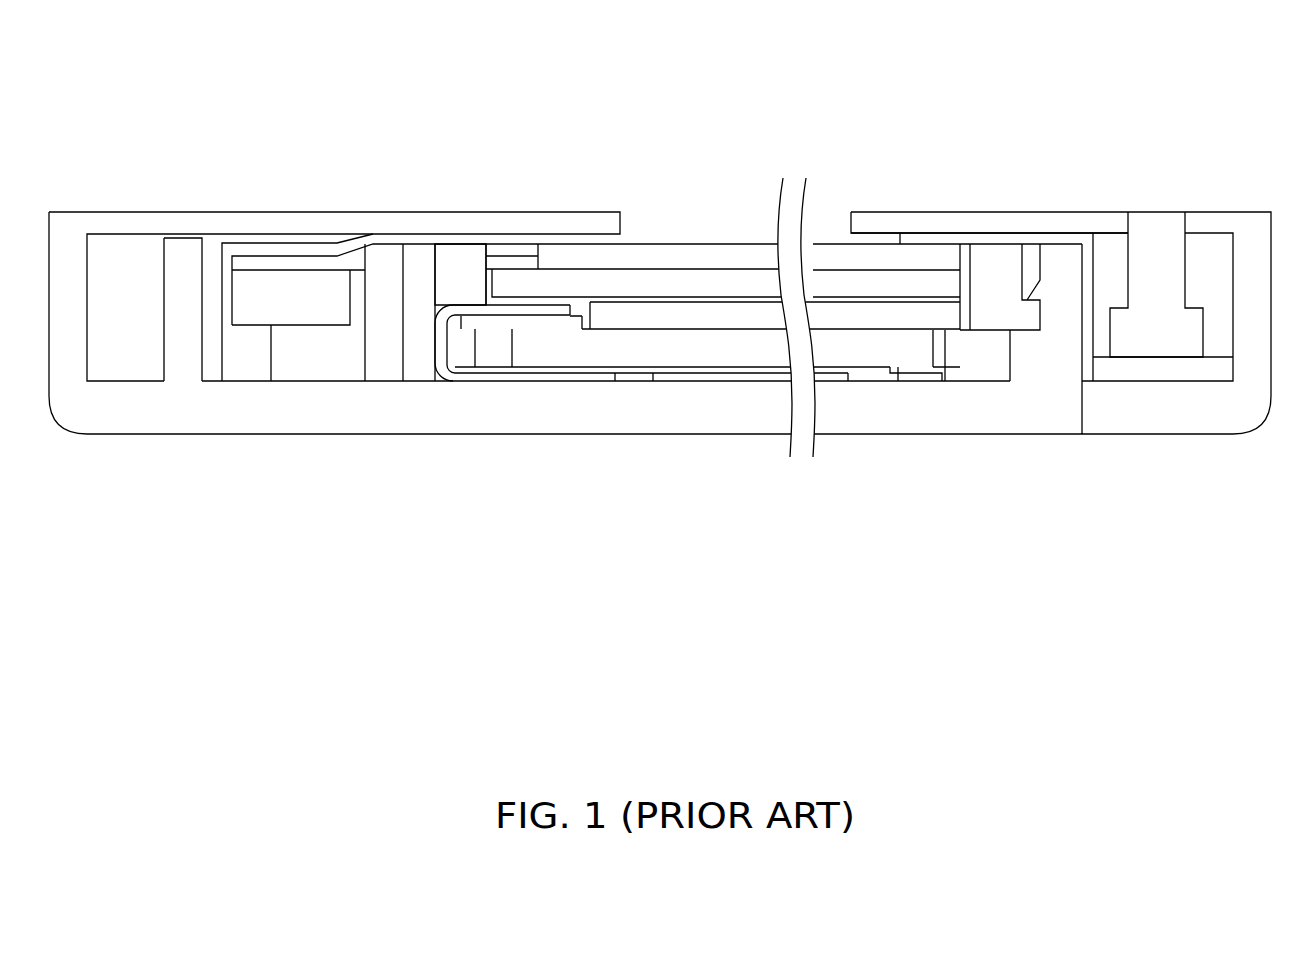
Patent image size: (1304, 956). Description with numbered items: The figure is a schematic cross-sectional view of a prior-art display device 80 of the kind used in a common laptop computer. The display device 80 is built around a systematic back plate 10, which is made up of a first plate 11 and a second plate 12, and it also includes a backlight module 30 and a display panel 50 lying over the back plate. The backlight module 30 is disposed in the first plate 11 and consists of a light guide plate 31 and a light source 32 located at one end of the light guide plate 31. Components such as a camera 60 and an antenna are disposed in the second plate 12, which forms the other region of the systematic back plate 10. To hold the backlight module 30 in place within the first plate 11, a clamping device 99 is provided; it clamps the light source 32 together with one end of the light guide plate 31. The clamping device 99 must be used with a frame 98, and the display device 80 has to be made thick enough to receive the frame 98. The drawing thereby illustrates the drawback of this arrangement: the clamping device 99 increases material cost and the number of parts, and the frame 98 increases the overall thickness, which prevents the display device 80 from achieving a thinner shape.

The display device 80 is at (88, 66).
The systematic back plate 10 is at (1006, 580).
The first plate 11 is at (962, 410).
The second plate 12 is at (1153, 408).
The backlight module 30 is at (540, 520).
The light guide plate 31 is at (688, 352).
The light source 32 is at (494, 355).
The display panel 50 is at (700, 285).
The camera 60 is at (1149, 230).
The frame 98 is at (460, 267).
The clamping device 99 is at (442, 345).